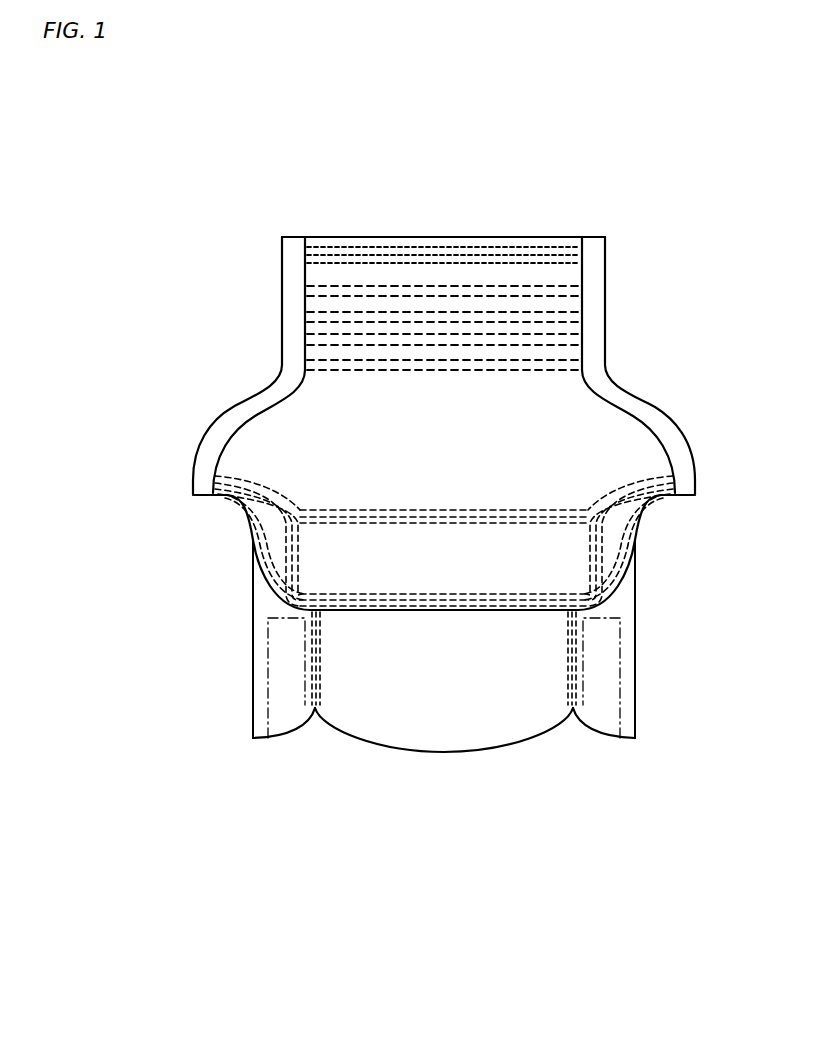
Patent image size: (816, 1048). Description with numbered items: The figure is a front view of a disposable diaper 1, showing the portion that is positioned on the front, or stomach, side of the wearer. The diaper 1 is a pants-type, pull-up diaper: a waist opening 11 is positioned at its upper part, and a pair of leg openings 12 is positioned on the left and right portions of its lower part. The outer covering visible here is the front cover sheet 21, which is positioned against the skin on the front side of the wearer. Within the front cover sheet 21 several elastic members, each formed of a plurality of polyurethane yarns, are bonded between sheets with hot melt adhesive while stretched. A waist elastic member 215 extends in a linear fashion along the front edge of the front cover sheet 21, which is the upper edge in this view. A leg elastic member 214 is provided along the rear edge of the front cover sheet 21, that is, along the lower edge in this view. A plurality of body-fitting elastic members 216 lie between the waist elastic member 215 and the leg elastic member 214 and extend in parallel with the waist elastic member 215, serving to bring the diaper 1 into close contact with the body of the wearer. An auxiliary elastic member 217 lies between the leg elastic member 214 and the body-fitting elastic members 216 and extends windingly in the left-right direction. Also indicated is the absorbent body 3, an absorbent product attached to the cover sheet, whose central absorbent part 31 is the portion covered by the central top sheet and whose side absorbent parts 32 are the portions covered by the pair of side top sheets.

The disposable diaper 1 is at (190, 161).
The waist opening 11 is at (333, 236).
The leg openings 12 is at (207, 592).
The front cover sheet 21 is at (287, 267).
The leg elastic member 214 is at (250, 537).
The waist elastic member 215 is at (388, 248).
The body-fitting elastic members 216 is at (438, 287).
The auxiliary elastic member 217 is at (312, 505).
The absorbent body 3 is at (445, 755).
The central absorbent part 31 is at (463, 753).
The side absorbent parts 32 is at (283, 738).